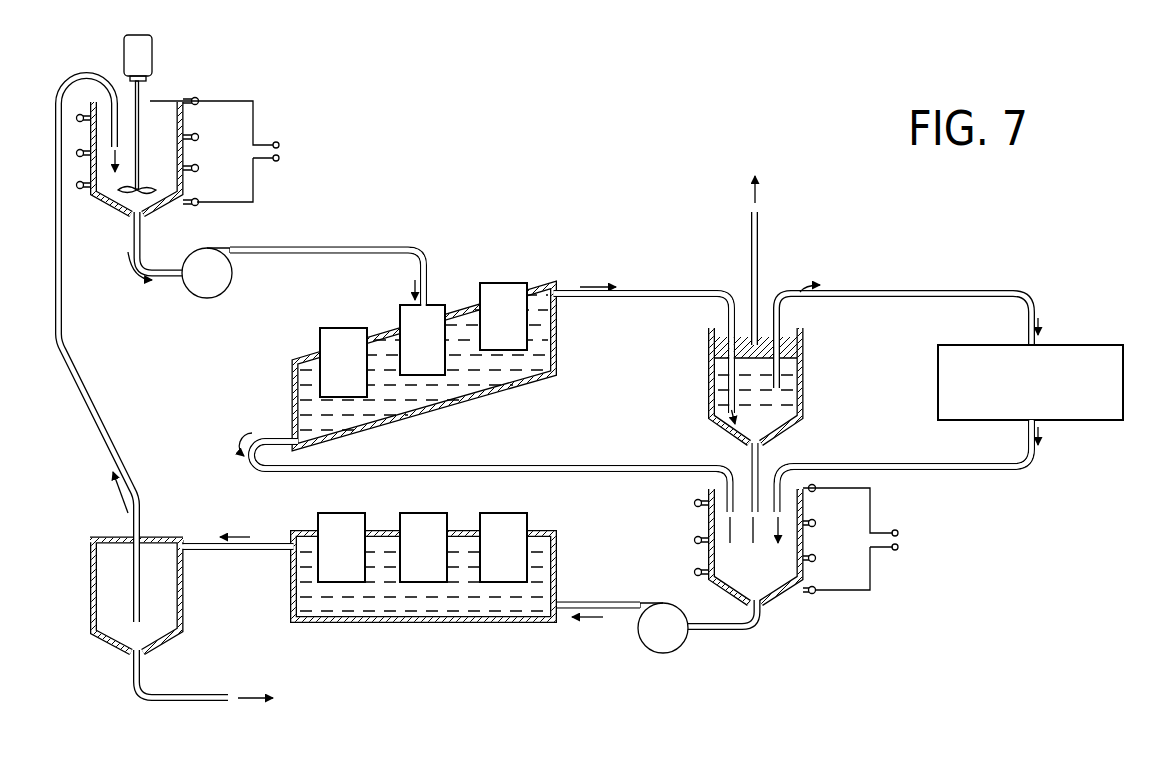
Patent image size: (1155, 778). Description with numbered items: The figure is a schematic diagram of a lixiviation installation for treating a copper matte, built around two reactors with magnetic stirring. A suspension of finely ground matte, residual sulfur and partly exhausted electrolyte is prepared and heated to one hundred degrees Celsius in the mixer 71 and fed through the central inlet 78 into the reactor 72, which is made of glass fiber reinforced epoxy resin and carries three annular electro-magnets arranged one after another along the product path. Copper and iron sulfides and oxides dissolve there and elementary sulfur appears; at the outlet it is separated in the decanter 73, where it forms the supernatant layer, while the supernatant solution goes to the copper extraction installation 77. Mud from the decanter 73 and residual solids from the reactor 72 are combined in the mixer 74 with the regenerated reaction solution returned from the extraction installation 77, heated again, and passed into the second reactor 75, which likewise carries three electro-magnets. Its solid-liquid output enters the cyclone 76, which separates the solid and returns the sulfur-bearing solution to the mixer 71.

The mixer 71 is at (112, 210).
The reactor 72 is at (513, 377).
The decanter 73 is at (803, 372).
The mixer 74 is at (785, 593).
The reactor 75 is at (472, 620).
The cyclone 76 is at (185, 592).
The copper extraction installation 77 is at (1044, 391).
The central inlet 78 is at (347, 293).